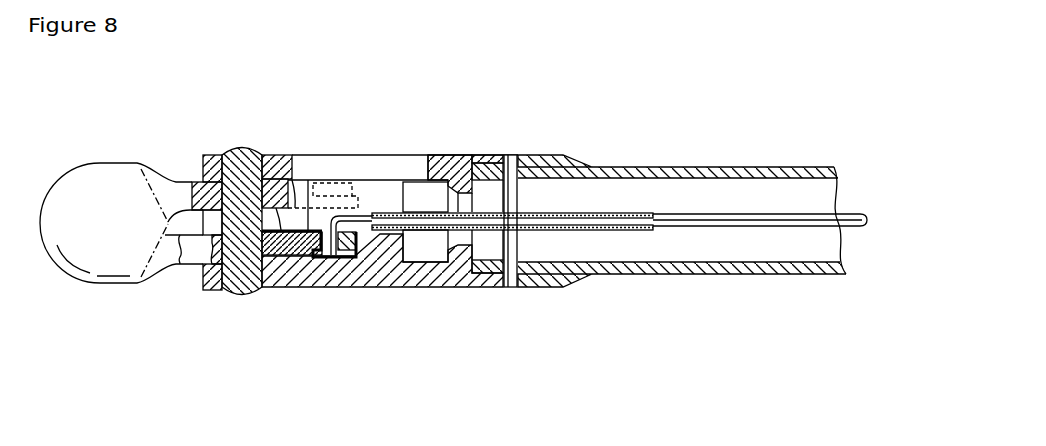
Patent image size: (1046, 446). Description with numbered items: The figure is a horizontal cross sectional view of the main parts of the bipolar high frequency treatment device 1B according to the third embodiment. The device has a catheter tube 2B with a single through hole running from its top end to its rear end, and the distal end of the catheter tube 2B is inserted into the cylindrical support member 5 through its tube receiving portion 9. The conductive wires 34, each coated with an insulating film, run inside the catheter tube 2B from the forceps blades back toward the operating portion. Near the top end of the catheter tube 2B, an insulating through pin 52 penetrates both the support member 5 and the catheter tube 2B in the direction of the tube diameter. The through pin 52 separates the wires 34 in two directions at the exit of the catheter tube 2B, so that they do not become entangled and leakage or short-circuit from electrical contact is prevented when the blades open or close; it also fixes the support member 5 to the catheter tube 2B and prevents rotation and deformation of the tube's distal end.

The bipolar high frequency treatment device 1B is at (320, 336).
The tube receiving portion 9 is at (486, 156).
The through pin 52 is at (521, 247).
The support member 5 is at (590, 138).
The catheter tube 2B is at (727, 274).
The wire 34 is at (682, 222).